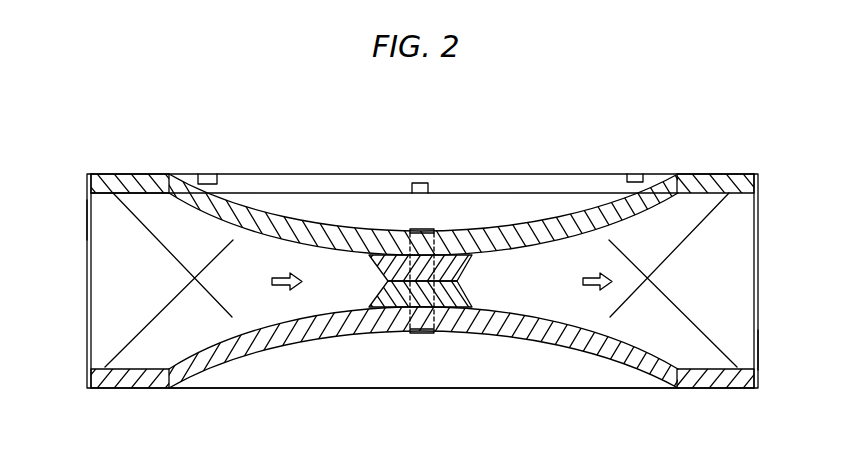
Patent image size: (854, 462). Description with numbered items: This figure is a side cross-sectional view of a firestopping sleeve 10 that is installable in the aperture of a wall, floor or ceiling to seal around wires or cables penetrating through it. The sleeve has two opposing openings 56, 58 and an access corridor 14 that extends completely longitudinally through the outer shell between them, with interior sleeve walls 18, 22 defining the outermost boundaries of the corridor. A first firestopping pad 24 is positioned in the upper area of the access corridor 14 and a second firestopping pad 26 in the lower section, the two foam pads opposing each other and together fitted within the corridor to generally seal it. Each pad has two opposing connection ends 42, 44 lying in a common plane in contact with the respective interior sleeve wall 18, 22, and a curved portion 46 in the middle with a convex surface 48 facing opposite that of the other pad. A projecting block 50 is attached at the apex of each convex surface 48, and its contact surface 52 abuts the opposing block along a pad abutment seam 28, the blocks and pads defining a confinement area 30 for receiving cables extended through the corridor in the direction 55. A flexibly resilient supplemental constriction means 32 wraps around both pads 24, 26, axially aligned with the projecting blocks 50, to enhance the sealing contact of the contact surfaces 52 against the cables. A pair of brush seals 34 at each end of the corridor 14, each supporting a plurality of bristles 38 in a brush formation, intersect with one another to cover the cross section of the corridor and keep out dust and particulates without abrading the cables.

The firestopping sleeve 10 is at (178, 106).
The access corridor 14 is at (130, 279).
The interior sleeve wall 18 is at (583, 174).
The interior sleeve wall 22 is at (627, 388).
The first firestopping pad 24 is at (355, 212).
The second firestopping pad 26 is at (340, 348).
The pad abutment seam 28 is at (468, 281).
The confinement area 30 is at (366, 277).
The supplemental constriction means 32 is at (427, 183).
The brush seals 34 is at (114, 219).
The bristles 38 is at (168, 253).
The connection end 42 is at (128, 181).
The connection end 44 is at (725, 174).
The curved portion 46 is at (548, 230).
The convex surface 48 is at (262, 243).
The projecting block 50 is at (452, 255).
The contact surface 52 is at (390, 255).
The direction 55 is at (280, 292).
The opening 56 is at (87, 222).
The opening 58 is at (758, 353).